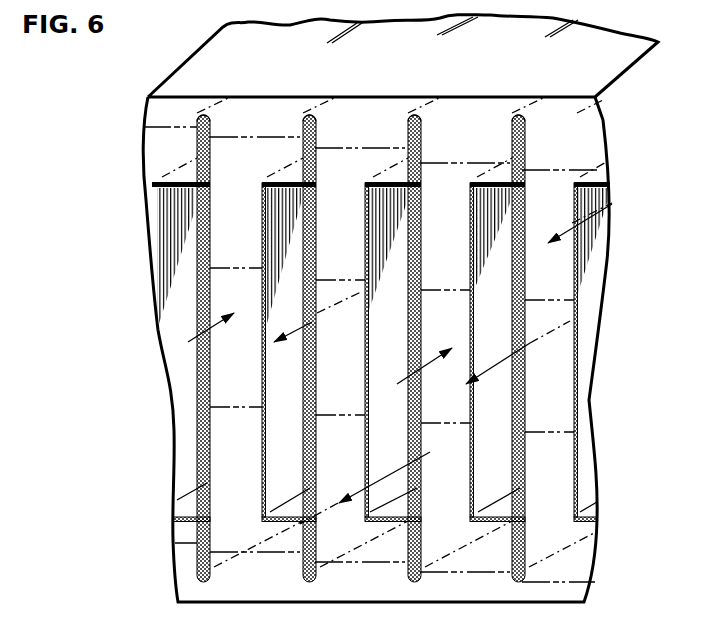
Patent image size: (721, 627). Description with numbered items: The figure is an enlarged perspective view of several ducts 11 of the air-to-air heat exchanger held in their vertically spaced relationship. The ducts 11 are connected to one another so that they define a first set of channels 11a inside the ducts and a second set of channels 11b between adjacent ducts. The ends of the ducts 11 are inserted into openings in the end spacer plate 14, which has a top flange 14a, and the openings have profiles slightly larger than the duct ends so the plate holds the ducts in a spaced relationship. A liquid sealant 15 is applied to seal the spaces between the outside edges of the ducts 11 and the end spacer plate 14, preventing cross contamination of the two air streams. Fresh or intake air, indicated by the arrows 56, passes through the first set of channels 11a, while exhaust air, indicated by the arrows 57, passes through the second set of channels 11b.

The duct 11 is at (511, 139).
The first set of channels 11a is at (491, 473).
The second set of channels 11b is at (541, 397).
The end spacer plate 14 is at (578, 143).
The top flange 14a is at (608, 63).
The liquid sealant 15 is at (524, 147).
The arrows designating fresh air flow 56 is at (306, 324).
The arrows designating exhaust air flow 57 is at (202, 336).